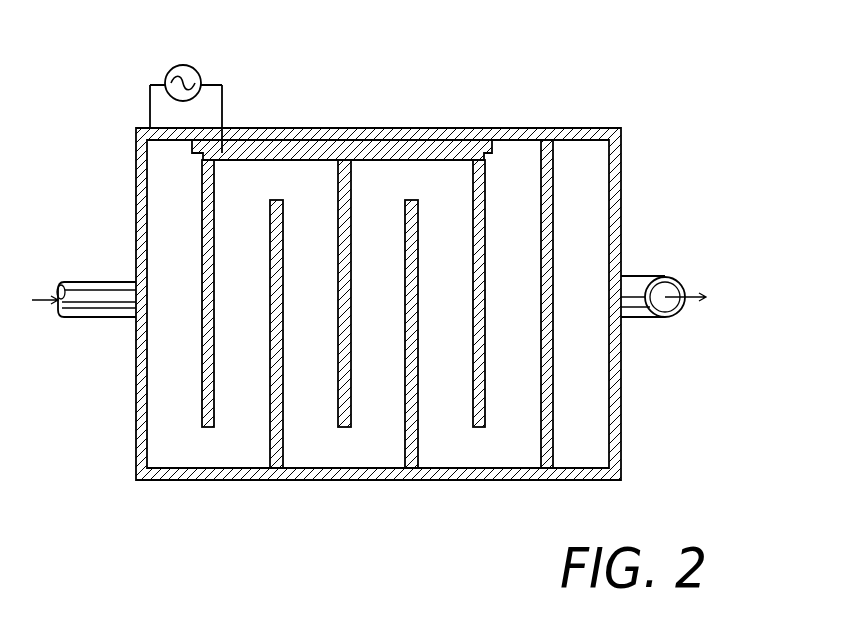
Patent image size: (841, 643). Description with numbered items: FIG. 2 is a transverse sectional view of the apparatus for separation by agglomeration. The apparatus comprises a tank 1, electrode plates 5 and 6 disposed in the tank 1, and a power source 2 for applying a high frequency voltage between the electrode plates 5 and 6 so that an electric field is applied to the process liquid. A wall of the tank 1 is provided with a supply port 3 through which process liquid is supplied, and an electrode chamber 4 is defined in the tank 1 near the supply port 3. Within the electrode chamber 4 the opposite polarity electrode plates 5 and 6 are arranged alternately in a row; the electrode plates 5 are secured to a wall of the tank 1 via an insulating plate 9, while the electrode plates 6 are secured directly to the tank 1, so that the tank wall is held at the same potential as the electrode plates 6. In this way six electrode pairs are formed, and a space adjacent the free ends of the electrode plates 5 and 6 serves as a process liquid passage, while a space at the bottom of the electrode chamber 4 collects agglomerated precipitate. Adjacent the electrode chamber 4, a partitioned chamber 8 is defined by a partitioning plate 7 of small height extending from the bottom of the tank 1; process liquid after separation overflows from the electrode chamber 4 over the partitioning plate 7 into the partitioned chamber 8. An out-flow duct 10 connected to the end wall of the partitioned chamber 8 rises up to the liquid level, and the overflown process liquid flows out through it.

The tank 1 is at (577, 128).
The power source 2 is at (180, 65).
The supply port 3 is at (118, 305).
The electrode chamber 4 is at (315, 192).
The electrode plates 5 is at (202, 238).
The electrode plates 6 is at (270, 238).
The partitioning plate 7 is at (541, 237).
The partitioned chamber 8 is at (582, 163).
The insulating plate 9 is at (420, 148).
The out-flow duct 10 is at (667, 278).